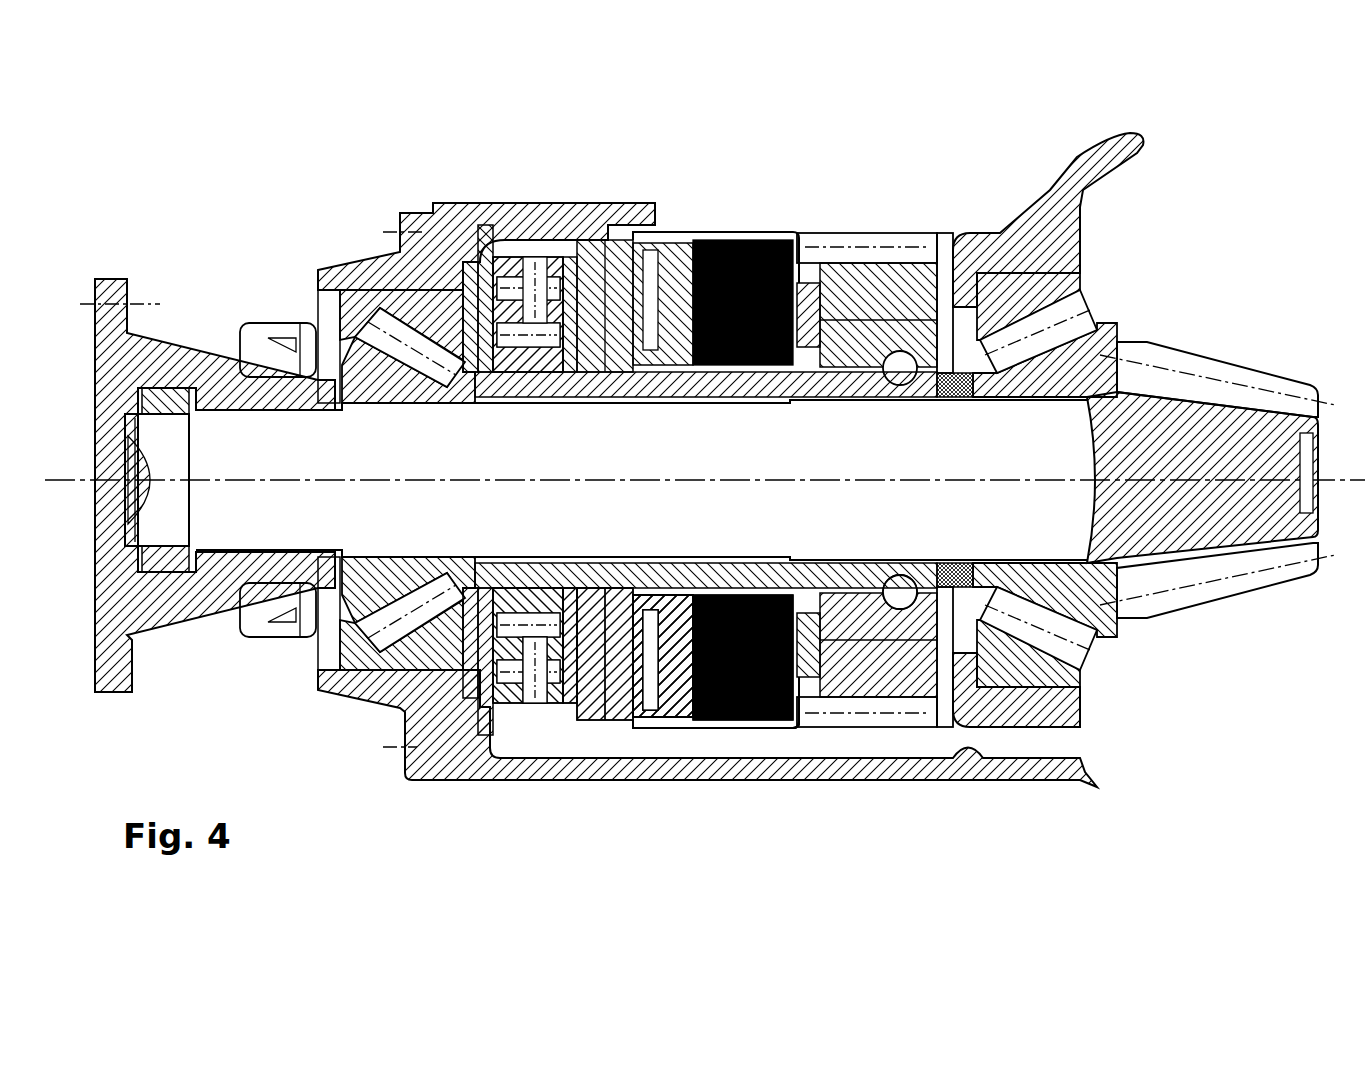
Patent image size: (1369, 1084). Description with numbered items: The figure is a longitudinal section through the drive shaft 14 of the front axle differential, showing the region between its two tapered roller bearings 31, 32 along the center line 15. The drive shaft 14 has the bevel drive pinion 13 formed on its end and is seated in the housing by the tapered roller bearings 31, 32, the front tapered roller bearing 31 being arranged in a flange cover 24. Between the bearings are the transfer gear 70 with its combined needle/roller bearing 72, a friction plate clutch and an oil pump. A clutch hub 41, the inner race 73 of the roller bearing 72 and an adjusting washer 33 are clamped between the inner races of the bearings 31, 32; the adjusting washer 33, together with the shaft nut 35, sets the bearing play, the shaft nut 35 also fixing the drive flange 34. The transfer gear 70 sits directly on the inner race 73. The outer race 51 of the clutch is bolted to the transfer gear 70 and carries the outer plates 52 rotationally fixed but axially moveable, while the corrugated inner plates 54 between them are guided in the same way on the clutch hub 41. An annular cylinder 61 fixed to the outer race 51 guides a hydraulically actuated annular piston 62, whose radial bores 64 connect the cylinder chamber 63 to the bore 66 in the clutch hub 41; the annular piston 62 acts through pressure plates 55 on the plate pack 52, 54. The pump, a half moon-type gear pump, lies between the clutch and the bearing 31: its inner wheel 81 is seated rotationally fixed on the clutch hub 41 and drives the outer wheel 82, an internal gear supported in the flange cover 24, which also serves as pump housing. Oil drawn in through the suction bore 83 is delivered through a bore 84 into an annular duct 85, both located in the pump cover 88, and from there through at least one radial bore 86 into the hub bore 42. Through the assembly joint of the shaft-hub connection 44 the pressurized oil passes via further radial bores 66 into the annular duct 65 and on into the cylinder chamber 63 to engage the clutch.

The bevel drive pinion 13 is at (1185, 565).
The drive shaft 14 is at (362, 432).
The center line 15 is at (1252, 478).
The flange cover 24 is at (418, 240).
The tapered roller bearing 31 is at (385, 333).
The tapered roller bearing 32 is at (1047, 317).
The adjusting washer 33 is at (983, 343).
The drive flange 34 is at (213, 359).
The shaft nut 35 is at (164, 410).
The clutch hub 41 is at (545, 268).
The hub bore 42 is at (478, 330).
The shaft-hub connection 44 is at (508, 590).
The outer race 51 is at (800, 235).
The outer plates 52 is at (903, 283).
The inner plates 54 is at (768, 729).
The pressure plates 55 is at (712, 729).
The annular cylinder 61 is at (659, 731).
The annular piston 62 is at (680, 729).
The cylinder chamber 63 is at (660, 240).
The radial bores 64 is at (710, 232).
The annular duct 65 is at (638, 728).
The bore 66 is at (767, 232).
The transfer gear 70 is at (953, 373).
The needle/roller bearing 72 is at (930, 605).
The inner race 73 is at (865, 620).
The inner wheel 81 is at (503, 640).
The outer wheel 82 is at (548, 712).
The suction bore 83 is at (535, 688).
The bore 84 is at (623, 295).
The annular duct 85 is at (585, 705).
The radial bore 86 is at (577, 275).
The cover 88 is at (590, 290).